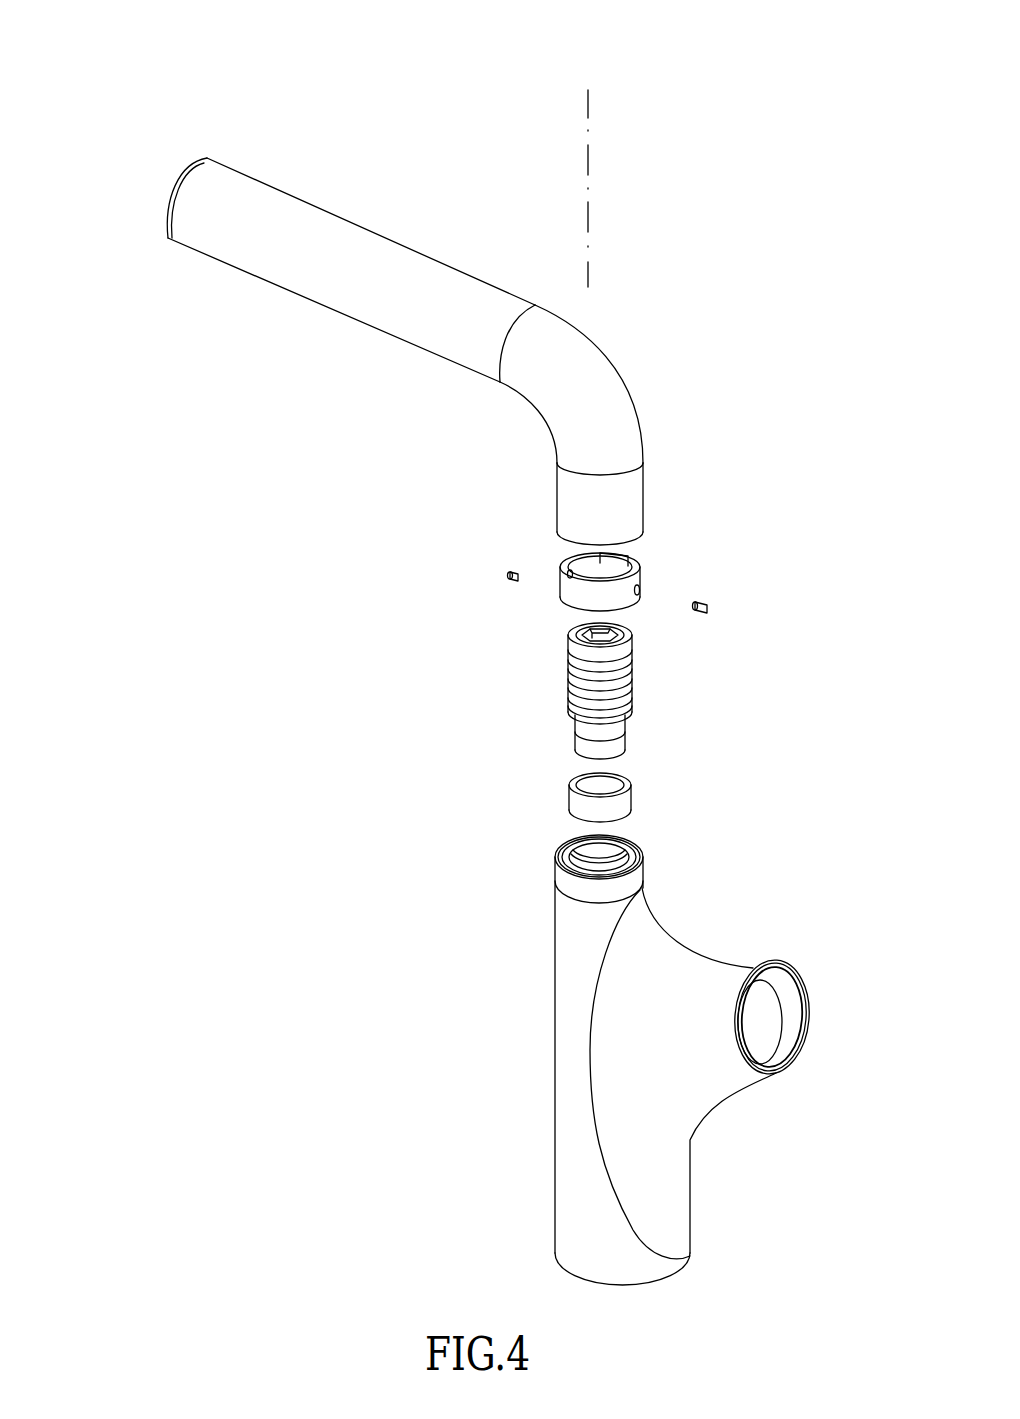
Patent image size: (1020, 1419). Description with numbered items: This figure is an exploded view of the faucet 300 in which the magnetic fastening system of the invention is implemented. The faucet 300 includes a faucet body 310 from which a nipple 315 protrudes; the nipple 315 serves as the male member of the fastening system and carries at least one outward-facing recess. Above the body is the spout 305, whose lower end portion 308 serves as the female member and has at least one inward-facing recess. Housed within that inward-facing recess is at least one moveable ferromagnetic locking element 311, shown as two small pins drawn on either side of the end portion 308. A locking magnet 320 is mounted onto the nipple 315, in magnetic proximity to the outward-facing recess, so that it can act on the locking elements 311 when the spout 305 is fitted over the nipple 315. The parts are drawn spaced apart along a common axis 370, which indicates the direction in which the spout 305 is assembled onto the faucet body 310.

The faucet 300 is at (192, 76).
The spout 305 is at (608, 357).
The end portion 308 is at (636, 565).
The faucet body 310 is at (553, 982).
The moveable ferromagnetic locking element 311 is at (508, 573).
The nipple 315 is at (630, 694).
The locking magnet 320 is at (632, 788).
The axis 370 is at (588, 162).